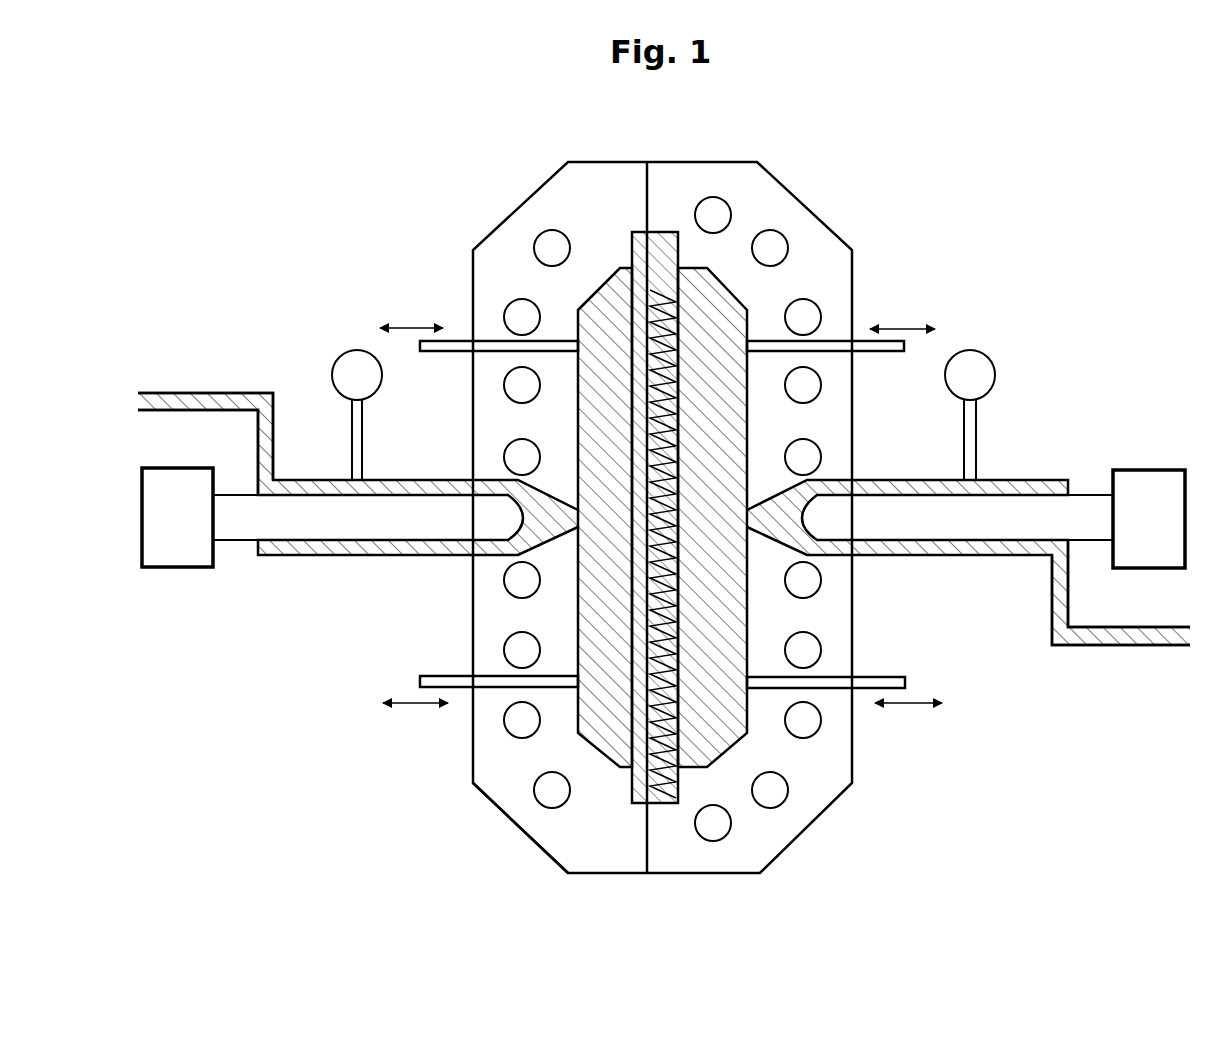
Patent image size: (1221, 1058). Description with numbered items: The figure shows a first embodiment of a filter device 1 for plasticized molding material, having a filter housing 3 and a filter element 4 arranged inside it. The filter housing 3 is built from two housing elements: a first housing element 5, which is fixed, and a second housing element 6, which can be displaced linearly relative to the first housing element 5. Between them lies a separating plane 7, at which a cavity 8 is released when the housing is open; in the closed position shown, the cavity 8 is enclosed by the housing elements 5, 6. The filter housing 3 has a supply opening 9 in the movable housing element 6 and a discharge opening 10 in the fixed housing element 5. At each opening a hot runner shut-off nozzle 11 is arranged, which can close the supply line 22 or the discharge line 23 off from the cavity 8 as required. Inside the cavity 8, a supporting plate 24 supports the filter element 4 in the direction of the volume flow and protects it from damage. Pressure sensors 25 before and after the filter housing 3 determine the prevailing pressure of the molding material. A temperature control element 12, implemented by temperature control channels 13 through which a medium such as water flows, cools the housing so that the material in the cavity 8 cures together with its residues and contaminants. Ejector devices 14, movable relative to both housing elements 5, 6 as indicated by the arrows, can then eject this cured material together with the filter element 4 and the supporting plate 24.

The filter device 1 is at (225, 140).
The filter housing 3 is at (752, 133).
The filter element 4 is at (637, 806).
The first housing element 5 is at (768, 196).
The second housing element 6 is at (553, 196).
The separating plane 7 is at (652, 172).
The cavity 8 is at (730, 738).
The supply opening 9 is at (470, 480).
The discharge opening 10 is at (857, 560).
The hot runner shut-off nozzle 11 is at (291, 515).
The temperature control element 12 is at (455, 800).
The temperature control channels 13 is at (631, 553).
The ejector devices 14 is at (470, 341).
The supply line 22 is at (207, 393).
The discharge line 23 is at (1138, 633).
The supporting plate 24 is at (663, 790).
The pressure sensors 25 is at (336, 362).